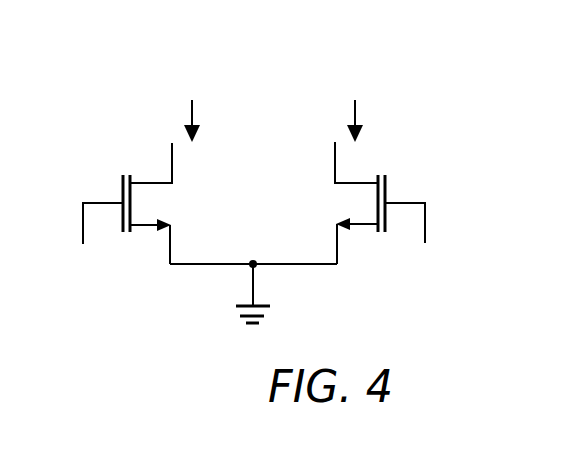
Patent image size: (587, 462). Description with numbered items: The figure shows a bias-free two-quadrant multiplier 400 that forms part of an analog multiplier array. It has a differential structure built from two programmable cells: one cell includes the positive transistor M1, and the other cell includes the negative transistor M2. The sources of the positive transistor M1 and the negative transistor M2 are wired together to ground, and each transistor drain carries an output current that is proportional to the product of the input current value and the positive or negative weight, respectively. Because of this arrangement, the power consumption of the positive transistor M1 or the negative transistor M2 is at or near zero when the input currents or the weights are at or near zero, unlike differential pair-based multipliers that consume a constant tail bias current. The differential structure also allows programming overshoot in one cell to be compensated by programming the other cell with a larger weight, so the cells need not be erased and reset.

The bias-free two-quadrant multiplier 400 is at (134, 104).
The positive transistor M1 is at (142, 203).
The negative transistor M2 is at (361, 203).